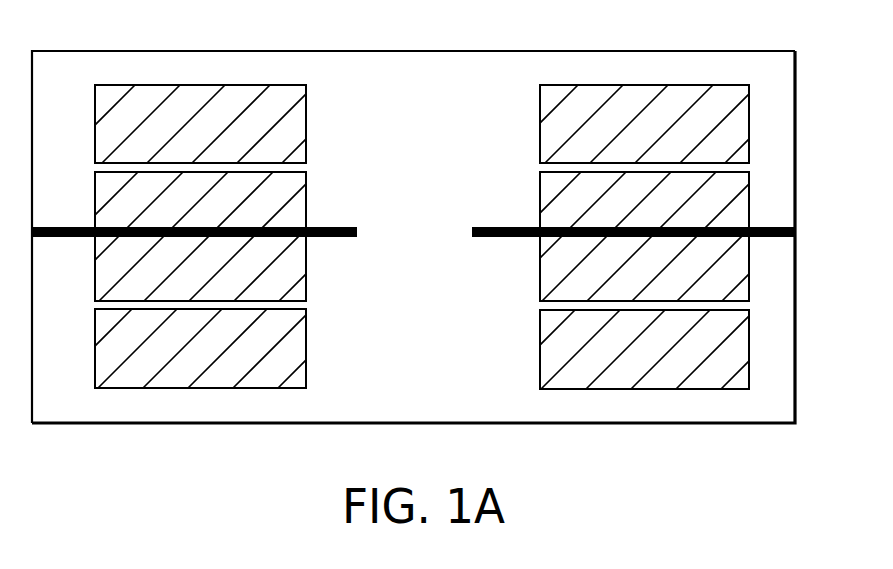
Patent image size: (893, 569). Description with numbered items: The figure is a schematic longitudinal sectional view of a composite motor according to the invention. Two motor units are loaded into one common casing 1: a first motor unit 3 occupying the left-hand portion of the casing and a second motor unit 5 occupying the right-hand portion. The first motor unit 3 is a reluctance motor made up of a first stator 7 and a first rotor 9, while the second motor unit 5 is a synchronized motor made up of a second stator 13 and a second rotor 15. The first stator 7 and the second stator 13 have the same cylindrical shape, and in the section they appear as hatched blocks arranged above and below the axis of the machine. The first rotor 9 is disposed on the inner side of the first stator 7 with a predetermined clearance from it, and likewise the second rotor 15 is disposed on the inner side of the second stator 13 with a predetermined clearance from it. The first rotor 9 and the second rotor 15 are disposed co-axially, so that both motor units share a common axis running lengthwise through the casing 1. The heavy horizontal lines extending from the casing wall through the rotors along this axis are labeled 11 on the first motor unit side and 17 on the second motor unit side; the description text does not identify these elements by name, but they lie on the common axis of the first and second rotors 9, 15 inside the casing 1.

The casing 1 is at (380, 51).
The first motor unit 3 is at (192, 70).
The second motor unit 5 is at (627, 70).
The first stator 7 is at (306, 125).
The first rotor 9 is at (306, 192).
The first shaft 11 is at (316, 238).
The second stator 13 is at (735, 123).
The second rotor 15 is at (735, 206).
The second shaft 17 is at (775, 238).